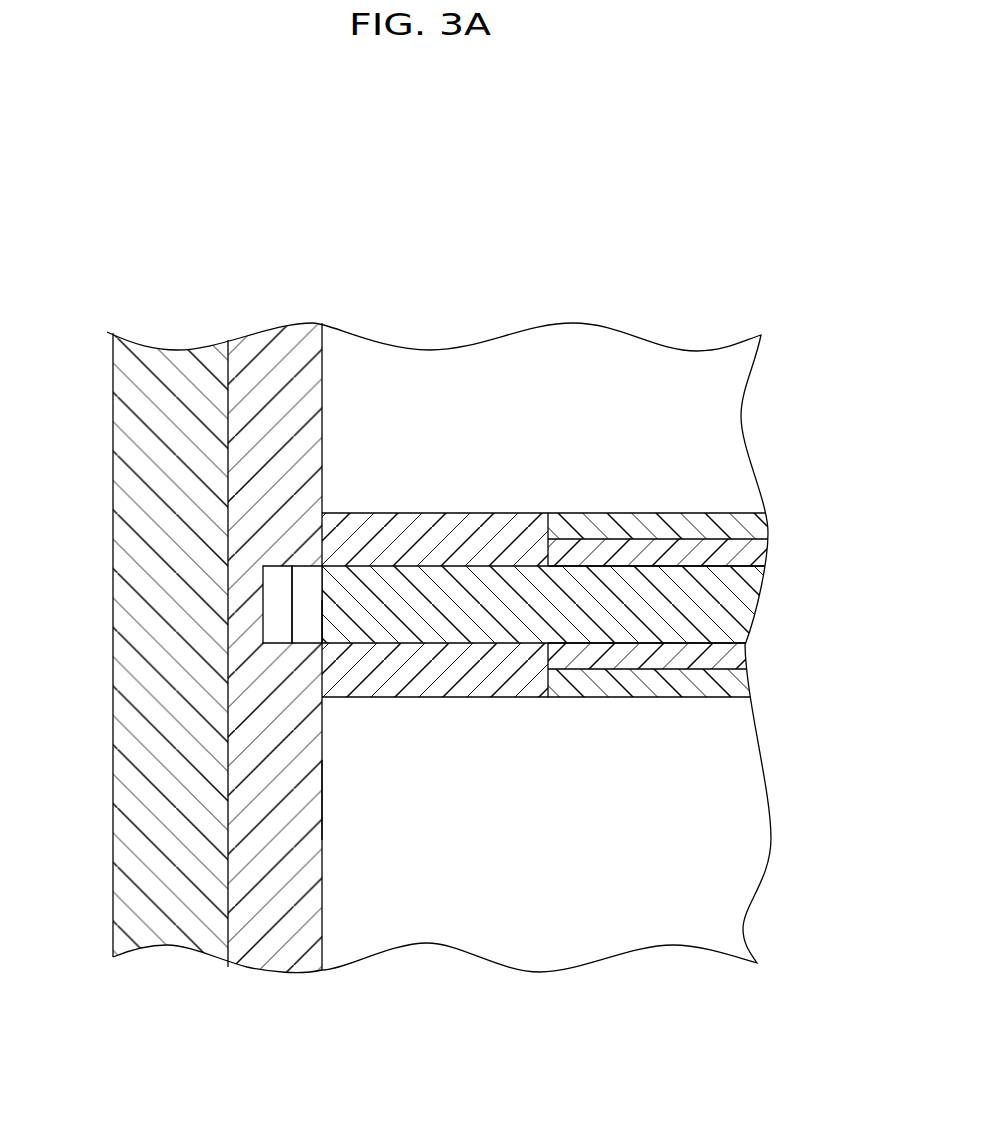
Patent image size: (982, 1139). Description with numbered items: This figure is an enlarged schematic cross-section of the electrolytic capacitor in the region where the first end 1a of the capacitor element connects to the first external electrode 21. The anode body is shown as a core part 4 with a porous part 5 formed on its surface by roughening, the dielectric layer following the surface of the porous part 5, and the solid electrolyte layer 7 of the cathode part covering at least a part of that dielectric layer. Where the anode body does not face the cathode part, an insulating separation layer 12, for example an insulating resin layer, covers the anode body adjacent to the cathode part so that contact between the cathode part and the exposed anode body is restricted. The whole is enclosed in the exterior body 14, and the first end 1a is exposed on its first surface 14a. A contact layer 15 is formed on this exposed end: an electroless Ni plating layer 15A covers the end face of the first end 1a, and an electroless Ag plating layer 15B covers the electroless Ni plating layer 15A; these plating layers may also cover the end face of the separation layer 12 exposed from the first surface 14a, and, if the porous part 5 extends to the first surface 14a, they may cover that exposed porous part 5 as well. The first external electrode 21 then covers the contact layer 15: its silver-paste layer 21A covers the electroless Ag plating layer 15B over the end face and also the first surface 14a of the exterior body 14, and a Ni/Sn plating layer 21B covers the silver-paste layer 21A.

The first end 1a is at (311, 624).
The core part 4 is at (732, 603).
The porous part 5 is at (732, 550).
The solid electrolyte layer 7 is at (730, 528).
The separation layer 12 is at (417, 533).
The exterior body 14 is at (592, 923).
The first surface 14a is at (311, 804).
The contact layer 15 is at (268, 421).
The electroless Ni plating layer 15A is at (312, 578).
The electroless Ag plating layer 15B is at (277, 578).
The first external electrode 21 is at (217, 700).
The silver-paste layer 21A is at (287, 923).
The Ni/Sn plating layer 21B is at (158, 913).